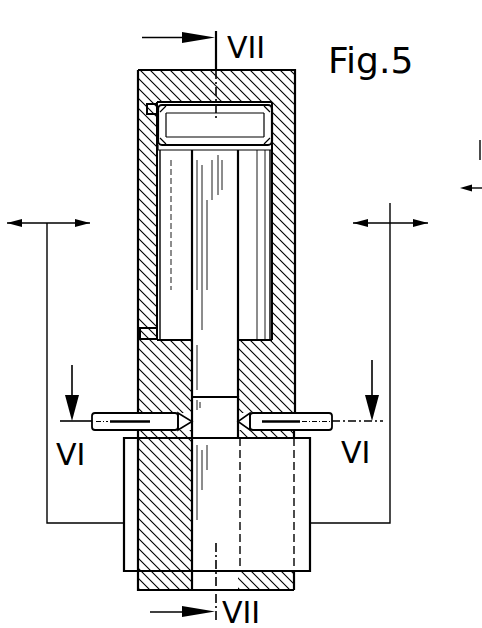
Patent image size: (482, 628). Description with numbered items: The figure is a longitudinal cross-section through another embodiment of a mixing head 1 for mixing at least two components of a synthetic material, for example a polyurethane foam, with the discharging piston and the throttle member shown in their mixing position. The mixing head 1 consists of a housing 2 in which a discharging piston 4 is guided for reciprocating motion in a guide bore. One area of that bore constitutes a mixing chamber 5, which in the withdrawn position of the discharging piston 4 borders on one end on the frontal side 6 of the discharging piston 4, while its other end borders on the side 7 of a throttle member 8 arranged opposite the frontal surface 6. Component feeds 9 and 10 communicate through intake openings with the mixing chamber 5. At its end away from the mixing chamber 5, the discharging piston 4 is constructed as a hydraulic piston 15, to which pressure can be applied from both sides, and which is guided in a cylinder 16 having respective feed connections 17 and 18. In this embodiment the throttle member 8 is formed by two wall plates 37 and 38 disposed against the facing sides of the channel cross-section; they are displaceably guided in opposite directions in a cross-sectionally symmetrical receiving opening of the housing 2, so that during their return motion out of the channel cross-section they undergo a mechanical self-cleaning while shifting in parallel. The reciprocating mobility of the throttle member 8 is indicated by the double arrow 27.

The mixing head 1 is at (302, 268).
The housing 2 is at (297, 360).
The discharging piston 4 is at (222, 211).
The mixing chamber 5 is at (225, 427).
The frontal side 6 is at (222, 392).
The side 7 is at (225, 440).
The throttle member 8 is at (318, 553).
The component feed 9 is at (120, 417).
The component feed 10 is at (317, 413).
The hydraulic piston 15 is at (258, 123).
The cylinder 16 is at (252, 165).
The feed connection 17 is at (147, 109).
The feed connection 18 is at (140, 334).
The double arrow 27 is at (388, 222).
The wall plate 37 is at (273, 517).
The wall plate 38 is at (130, 508).